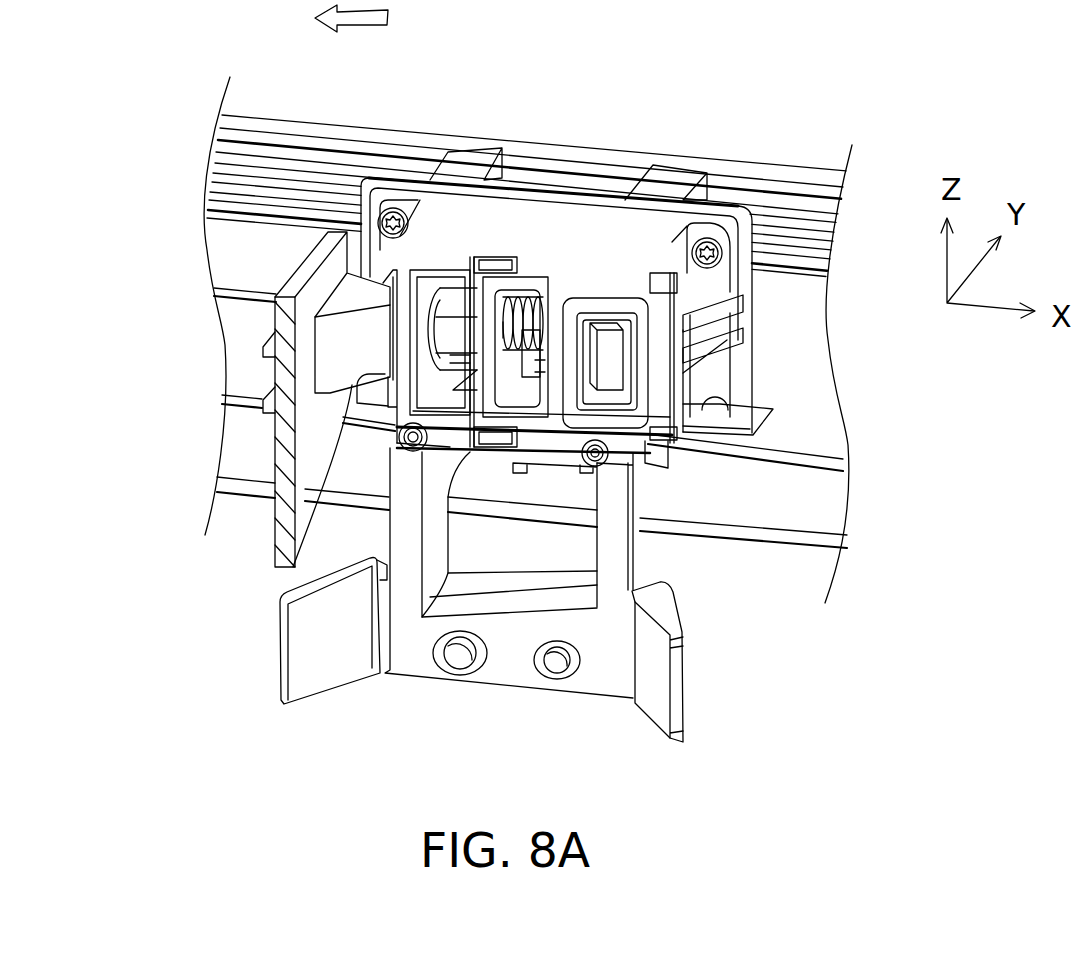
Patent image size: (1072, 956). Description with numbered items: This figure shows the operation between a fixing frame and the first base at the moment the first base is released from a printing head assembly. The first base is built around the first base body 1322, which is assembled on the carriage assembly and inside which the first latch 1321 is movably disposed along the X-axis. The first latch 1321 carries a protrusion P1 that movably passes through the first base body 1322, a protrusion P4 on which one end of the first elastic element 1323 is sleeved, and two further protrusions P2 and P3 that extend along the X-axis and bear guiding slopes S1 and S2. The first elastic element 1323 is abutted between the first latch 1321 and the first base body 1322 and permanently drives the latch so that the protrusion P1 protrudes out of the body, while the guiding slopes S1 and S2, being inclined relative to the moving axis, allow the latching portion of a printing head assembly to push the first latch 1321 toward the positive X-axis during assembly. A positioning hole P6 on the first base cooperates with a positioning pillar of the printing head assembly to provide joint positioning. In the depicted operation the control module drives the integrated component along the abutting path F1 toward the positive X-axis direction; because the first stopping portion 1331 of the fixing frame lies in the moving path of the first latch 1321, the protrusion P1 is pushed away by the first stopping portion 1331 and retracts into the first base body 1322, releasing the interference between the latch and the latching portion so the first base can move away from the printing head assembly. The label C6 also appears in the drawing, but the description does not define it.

The casing C6 is at (279, 128).
The abutting path F1 is at (337, 17).
The protrusion P1 is at (457, 307).
The first elastic element 1323 is at (520, 300).
The protrusion P4 is at (503, 300).
The first latch 1321 is at (553, 297).
The guiding slope S2 is at (623, 337).
The first base body 1322 is at (650, 230).
The first stopping portion 1331 is at (330, 352).
The guiding slope S1 is at (527, 368).
The protrusion P2 is at (540, 365).
The protrusion P3 is at (637, 370).
The positioning hole P6 is at (556, 658).